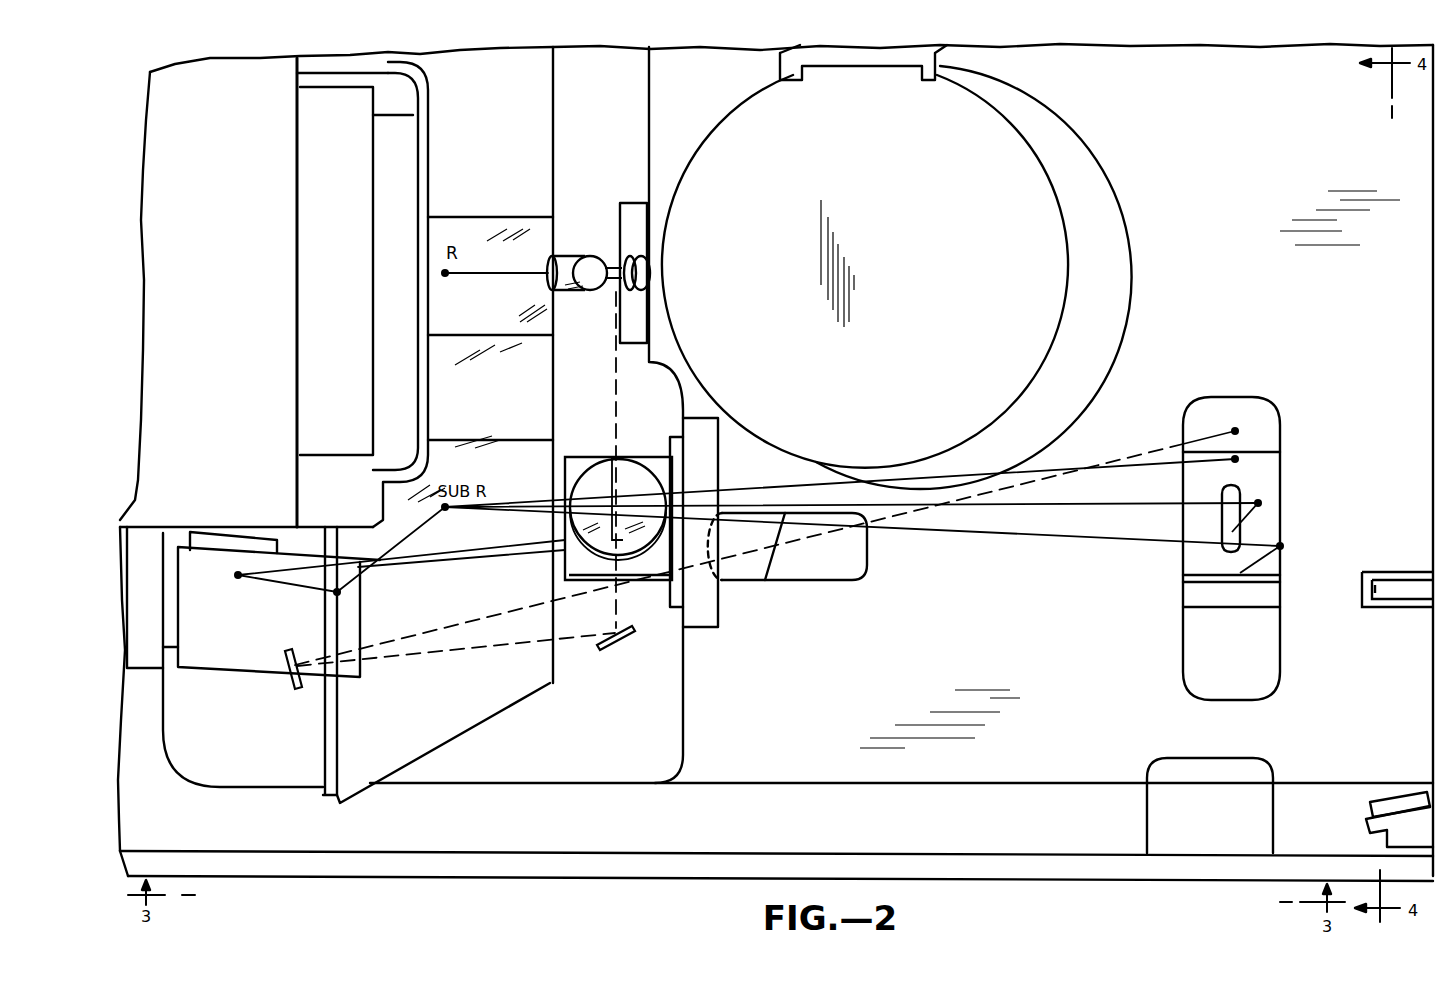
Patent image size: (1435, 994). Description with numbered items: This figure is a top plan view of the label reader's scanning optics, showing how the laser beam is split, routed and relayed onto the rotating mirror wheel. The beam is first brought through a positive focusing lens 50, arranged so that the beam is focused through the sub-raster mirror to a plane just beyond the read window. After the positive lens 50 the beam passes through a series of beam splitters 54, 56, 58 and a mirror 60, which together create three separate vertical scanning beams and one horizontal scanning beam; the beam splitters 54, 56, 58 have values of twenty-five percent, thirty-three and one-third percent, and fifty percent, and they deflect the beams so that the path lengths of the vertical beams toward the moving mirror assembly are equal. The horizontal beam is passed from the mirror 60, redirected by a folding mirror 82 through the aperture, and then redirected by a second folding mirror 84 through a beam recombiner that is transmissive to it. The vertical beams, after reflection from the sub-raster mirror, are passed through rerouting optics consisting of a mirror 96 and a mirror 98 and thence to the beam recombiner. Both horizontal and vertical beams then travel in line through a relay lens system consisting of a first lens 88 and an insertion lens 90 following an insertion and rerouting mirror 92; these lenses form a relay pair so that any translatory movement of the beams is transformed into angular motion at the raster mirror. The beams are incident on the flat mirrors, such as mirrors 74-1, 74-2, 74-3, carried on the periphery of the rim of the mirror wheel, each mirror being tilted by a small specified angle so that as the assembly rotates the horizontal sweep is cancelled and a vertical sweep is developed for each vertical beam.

The positive focusing lens 50 is at (1372, 588).
The beam splitter 54 is at (1280, 546).
The beam splitter 56 is at (1258, 503).
The beam splitter 58 is at (1235, 459).
The mirror 60 is at (1235, 431).
The flat mirror 74-1 is at (490, 276).
The flat mirror 74-2 is at (490, 387).
The flat mirror 74-3 is at (490, 483).
The folding mirror 82 is at (290, 682).
The second folding mirror 84 is at (606, 650).
The first lens 88 is at (645, 490).
The insertion lens 90 is at (574, 257).
The insertion and rerouting mirror 92 is at (650, 272).
The mirror 96 is at (337, 592).
The mirror 98 is at (238, 575).